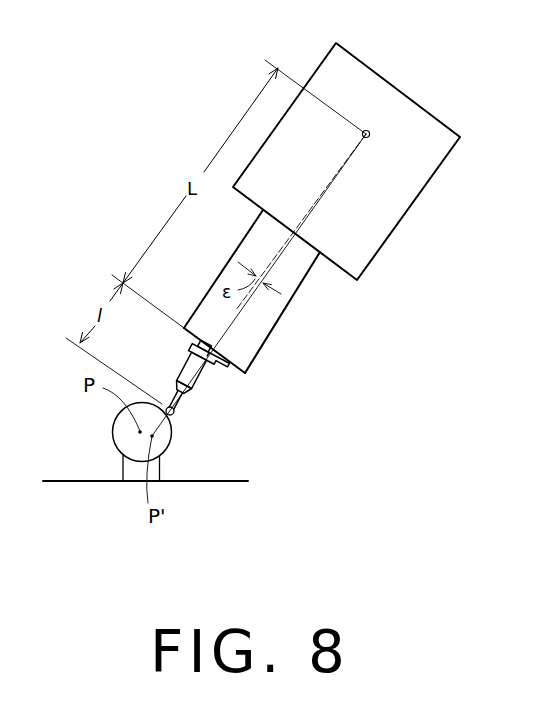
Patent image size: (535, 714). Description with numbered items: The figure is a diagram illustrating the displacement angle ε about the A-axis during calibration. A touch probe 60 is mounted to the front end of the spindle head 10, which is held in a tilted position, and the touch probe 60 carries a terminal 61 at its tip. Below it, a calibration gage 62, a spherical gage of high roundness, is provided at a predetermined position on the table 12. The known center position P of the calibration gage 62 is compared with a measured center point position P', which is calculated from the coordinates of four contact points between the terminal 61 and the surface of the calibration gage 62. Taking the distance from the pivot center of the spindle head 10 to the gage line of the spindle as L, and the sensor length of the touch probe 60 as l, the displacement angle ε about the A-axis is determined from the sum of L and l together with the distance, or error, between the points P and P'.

The spindle head 10 is at (397, 198).
The table 12 is at (215, 481).
The touch probe 60 is at (200, 375).
The terminal 61 is at (167, 407).
The calibration gage 62 is at (123, 432).